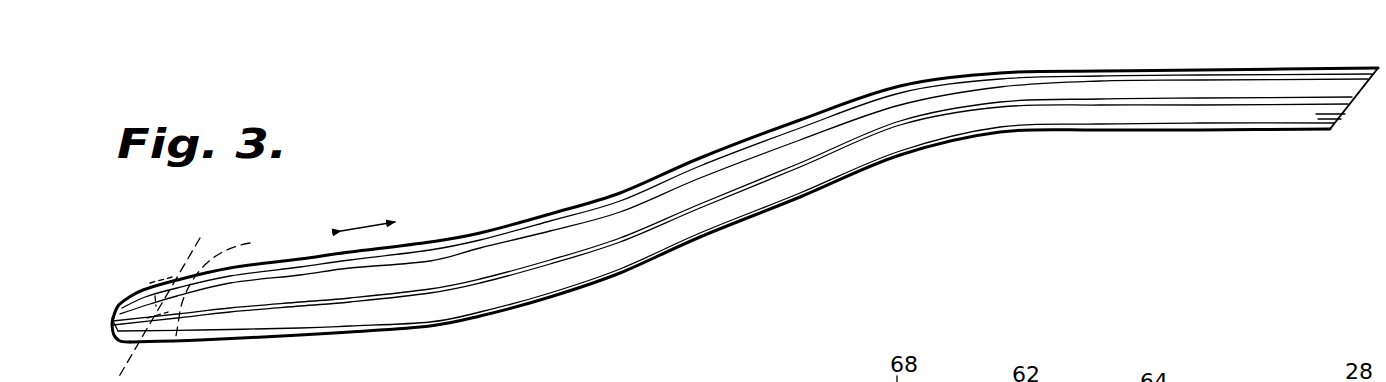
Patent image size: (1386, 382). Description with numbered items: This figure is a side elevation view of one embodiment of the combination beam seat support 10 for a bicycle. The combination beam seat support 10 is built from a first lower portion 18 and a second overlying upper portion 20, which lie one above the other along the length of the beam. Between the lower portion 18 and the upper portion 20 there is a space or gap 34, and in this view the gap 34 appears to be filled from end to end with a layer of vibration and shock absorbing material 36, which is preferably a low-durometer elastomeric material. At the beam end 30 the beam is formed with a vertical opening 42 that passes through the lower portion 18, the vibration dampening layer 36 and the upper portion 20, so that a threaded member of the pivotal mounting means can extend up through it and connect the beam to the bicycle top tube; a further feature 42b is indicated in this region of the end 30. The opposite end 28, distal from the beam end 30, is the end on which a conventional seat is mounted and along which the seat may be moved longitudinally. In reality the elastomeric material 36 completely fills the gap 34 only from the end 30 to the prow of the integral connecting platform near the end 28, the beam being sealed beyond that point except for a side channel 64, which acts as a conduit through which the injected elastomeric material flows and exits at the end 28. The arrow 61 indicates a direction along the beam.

The combination beam seat support 10 is at (711, 207).
The first lower portion 18 is at (633, 268).
The second overlying upper portion 20 is at (880, 92).
The end 28 is at (1316, 133).
The beam end 30 is at (132, 296).
The gap 34 is at (109, 327).
The vibration and shock absorbing material 36 is at (327, 301).
The vertical opening 42 is at (167, 295).
The insert portion 42b is at (236, 283).
The direction of movement 61 is at (361, 226).
The side channel 64 is at (1043, 103).